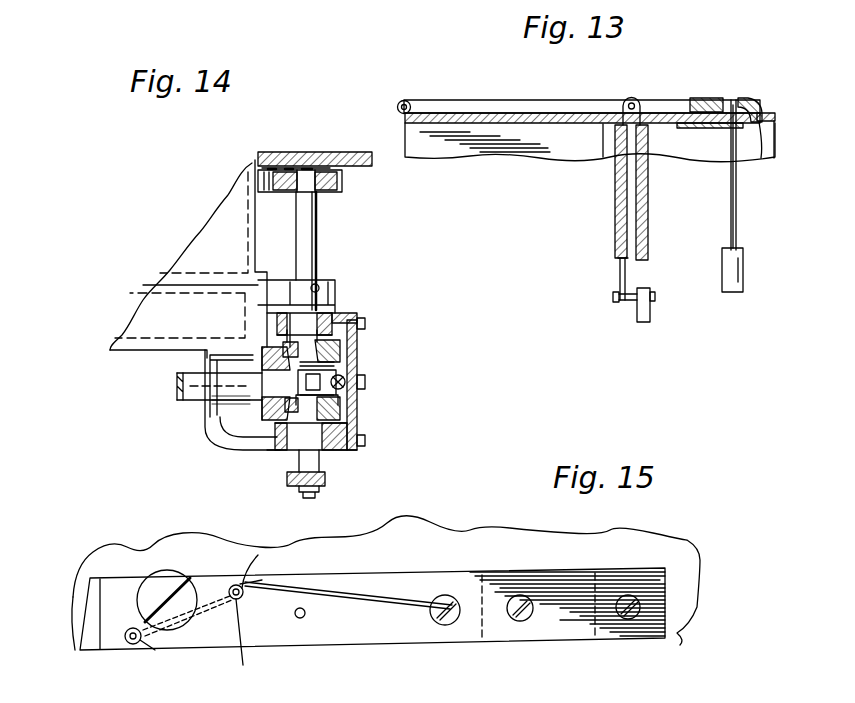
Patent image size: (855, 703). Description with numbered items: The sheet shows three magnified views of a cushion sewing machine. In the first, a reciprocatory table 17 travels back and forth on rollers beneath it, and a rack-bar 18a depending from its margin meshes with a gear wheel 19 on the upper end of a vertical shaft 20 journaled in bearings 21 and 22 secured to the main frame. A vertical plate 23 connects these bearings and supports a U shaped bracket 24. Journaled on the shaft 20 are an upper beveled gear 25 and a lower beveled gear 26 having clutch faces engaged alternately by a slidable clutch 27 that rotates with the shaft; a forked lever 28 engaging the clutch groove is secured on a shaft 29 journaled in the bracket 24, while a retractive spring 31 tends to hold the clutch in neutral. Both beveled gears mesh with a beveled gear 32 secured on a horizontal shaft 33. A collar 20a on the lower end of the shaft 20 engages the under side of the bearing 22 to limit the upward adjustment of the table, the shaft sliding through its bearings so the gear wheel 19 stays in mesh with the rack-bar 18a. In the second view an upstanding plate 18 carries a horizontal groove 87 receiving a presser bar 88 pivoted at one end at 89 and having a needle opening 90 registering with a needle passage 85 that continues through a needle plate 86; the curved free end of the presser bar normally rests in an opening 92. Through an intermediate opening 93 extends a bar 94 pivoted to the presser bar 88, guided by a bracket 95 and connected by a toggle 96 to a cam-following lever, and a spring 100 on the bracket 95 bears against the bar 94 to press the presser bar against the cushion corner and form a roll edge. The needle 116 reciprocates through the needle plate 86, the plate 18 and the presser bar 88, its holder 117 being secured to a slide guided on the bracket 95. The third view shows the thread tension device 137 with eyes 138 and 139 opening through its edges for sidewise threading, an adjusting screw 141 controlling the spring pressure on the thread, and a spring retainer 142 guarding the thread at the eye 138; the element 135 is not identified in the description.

In FIG. 14, the table 17 is at (319, 152).
In FIG. 13, the plate 18 is at (556, 130).
In FIG. 14, the rack-bar 18a is at (254, 183).
In FIG. 14, the gear wheel 19 is at (340, 190).
In FIG. 14, the vertical shaft 20 is at (320, 229).
In FIG. 14, the collar 20a is at (326, 479).
In FIG. 14, the bearing 21 is at (338, 286).
In FIG. 14, the bearing 22 is at (235, 452).
In FIG. 14, the vertical plate 23 is at (357, 332).
In FIG. 14, the U shaped bracket 24 is at (357, 359).
In FIG. 14, the upper beveled gear 25 is at (357, 348).
In FIG. 14, the lower beveled gear 26 is at (338, 424).
In FIG. 14, the slidable clutch 27 is at (330, 400).
In FIG. 14, the forked lever 28 is at (338, 364).
In FIG. 14, the shaft 29 is at (366, 385).
In FIG. 13, the retractive spring 31 is at (762, 158).
In FIG. 14, the beveled gear 32 is at (262, 400).
In FIG. 14, the horizontal shaft 33 is at (176, 387).
In FIG. 13, the needle passage 85 is at (745, 100).
In FIG. 13, the needle plate 86 is at (708, 128).
In FIG. 13, the horizontal groove 87 is at (496, 118).
In FIG. 13, the presser bar 88 is at (582, 86).
In FIG. 13, the pivot 89 is at (403, 100).
In FIG. 13, the needle opening 90 is at (706, 82).
In FIG. 13, the opening 92 is at (762, 108).
In FIG. 13, the opening 93 is at (603, 124).
In FIG. 13, the bar 94 is at (632, 100).
In FIG. 13, the bracket 95 is at (613, 240).
In FIG. 13, the toggle 96 is at (637, 318).
In FIG. 13, the spring 100 is at (620, 279).
In FIG. 13, the needle 116 is at (731, 240).
In FIG. 13, the holder 117 is at (735, 283).
In FIG. 15, the hook 135 is at (258, 555).
In FIG. 15, the tension device 137 is at (380, 574).
In FIG. 15, the eye 138 is at (210, 635).
In FIG. 15, the eye 139 is at (125, 645).
In FIG. 15, the adjusting screw 141 is at (160, 575).
In FIG. 15, the spring retainer 142 is at (442, 606).